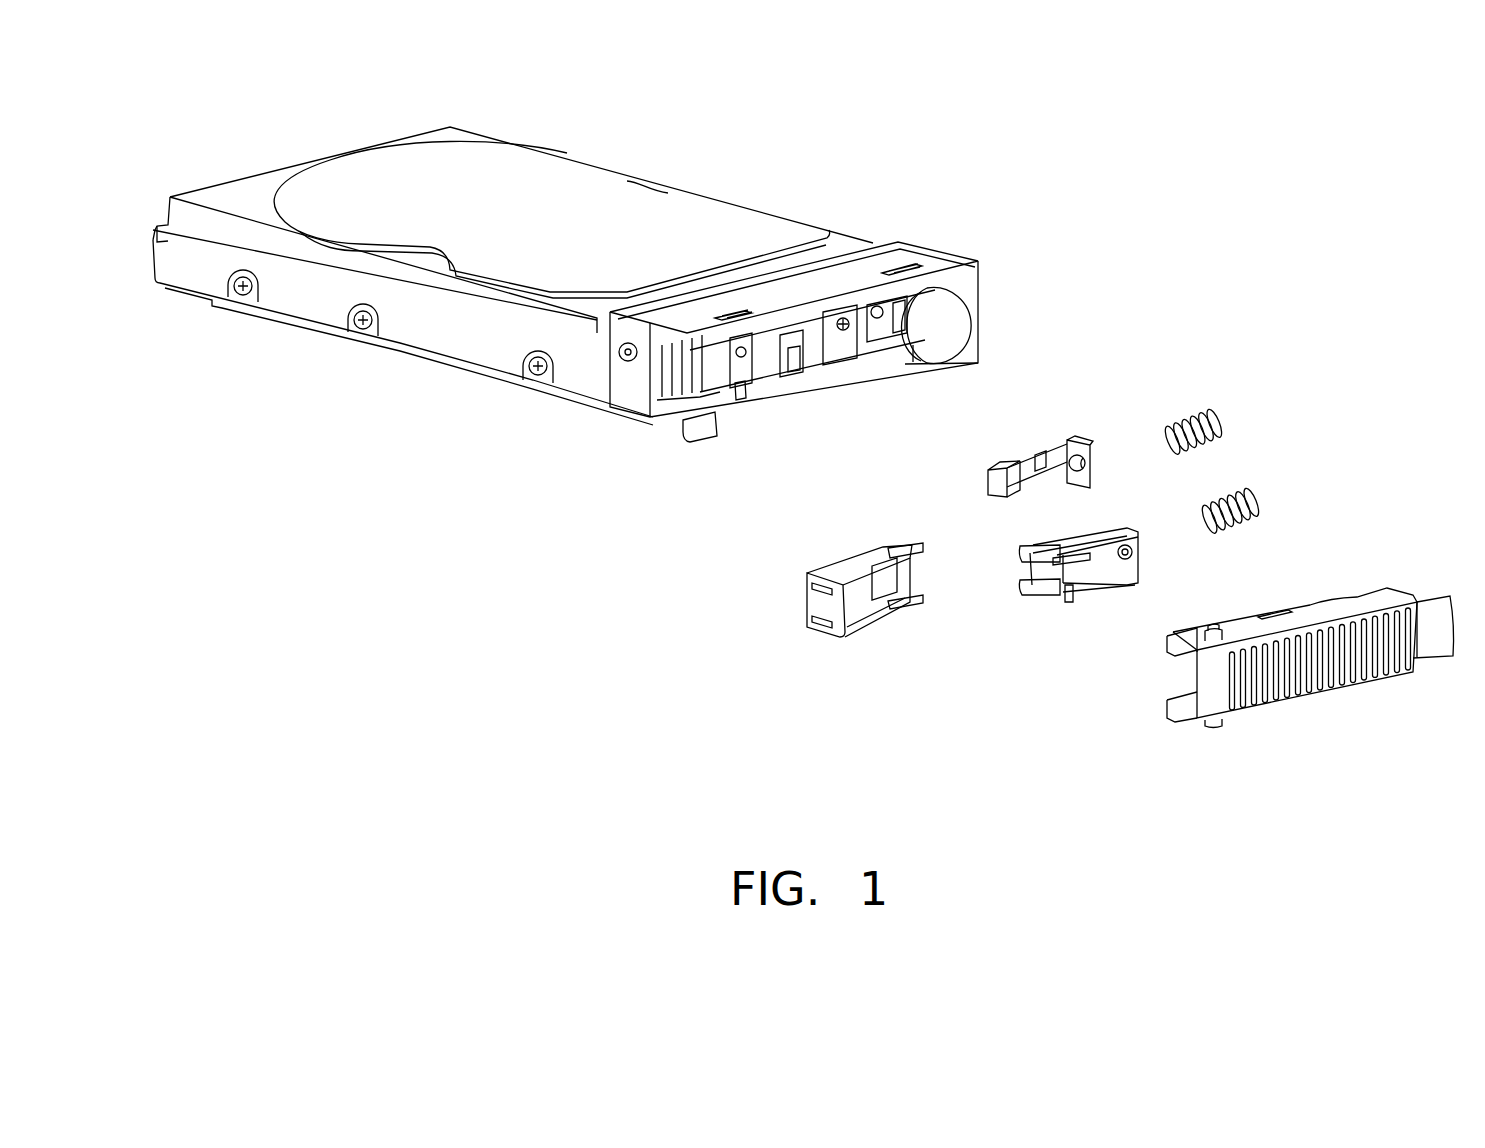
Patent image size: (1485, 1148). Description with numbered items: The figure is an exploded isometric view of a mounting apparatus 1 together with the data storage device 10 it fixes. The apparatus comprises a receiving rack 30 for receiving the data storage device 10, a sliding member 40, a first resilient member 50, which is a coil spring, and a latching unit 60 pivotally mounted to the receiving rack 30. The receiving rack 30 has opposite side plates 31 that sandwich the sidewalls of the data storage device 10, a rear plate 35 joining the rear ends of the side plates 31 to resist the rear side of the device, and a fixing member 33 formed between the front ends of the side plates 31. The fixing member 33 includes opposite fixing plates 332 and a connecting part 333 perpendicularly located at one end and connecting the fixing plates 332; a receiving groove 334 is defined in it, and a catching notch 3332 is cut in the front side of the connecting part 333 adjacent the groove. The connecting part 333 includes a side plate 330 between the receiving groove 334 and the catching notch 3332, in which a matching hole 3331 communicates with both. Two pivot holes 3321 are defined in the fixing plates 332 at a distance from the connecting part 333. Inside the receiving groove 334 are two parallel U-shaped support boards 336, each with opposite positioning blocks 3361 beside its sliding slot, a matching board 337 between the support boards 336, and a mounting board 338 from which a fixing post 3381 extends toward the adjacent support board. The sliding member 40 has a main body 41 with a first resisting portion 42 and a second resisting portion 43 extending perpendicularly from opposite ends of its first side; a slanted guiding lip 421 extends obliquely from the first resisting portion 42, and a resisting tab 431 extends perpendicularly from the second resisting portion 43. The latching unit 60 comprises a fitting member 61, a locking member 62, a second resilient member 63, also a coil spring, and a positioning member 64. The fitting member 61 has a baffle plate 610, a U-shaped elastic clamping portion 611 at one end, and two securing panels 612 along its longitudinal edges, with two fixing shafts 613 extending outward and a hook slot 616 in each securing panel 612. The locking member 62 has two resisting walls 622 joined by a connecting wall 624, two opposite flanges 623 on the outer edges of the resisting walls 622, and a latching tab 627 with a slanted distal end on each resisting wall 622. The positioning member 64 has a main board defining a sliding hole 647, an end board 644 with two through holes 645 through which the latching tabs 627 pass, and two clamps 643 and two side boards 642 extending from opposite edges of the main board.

The mounting apparatus 1 is at (1200, 150).
The data storage device 10 is at (558, 190).
The receiving rack 30 is at (333, 350).
The side plates 31 is at (428, 331).
The fixing member 33 is at (809, 337).
The rear plate 35 is at (165, 230).
The side plate 330 is at (922, 383).
The fixing plates 332 is at (855, 272).
The pivot holes 3321 is at (717, 412).
The connecting part 333 is at (972, 287).
The matching hole 3331 is at (887, 320).
The catching notch 3332 is at (948, 328).
The receiving groove 334 is at (713, 392).
The support boards 336 is at (727, 380).
The positioning blocks 3361 is at (747, 382).
The matching board 337 is at (767, 363).
The mounting board 338 is at (847, 347).
The fixing post 3381 is at (843, 320).
The sliding member 40 is at (1038, 432).
The main body 41 is at (1015, 465).
The first resisting portion 42 is at (1000, 486).
The slanted guiding lip 421 is at (1013, 497).
The second resisting portion 43 is at (1070, 447).
The resisting tab 431 is at (1086, 462).
The first resilient member 50 is at (1195, 418).
The latching unit 60 is at (1047, 700).
The fitting member 61 is at (1332, 708).
The baffle plate 610 is at (1275, 690).
The elastic clamping portion 611 is at (1423, 608).
The securing panels 612 is at (1345, 610).
The fixing shafts 613 is at (1213, 625).
The hook slot 616 is at (1272, 610).
The locking member 62 is at (1132, 515).
The resisting walls 622 is at (1065, 583).
The flanges 623 is at (1105, 585).
The connecting wall 624 is at (1135, 556).
The latching tab 627 is at (1022, 597).
The second resilient member 63 is at (1243, 505).
The positioning member 64 is at (815, 550).
The side boards 642 is at (862, 612).
The clamps 643 is at (912, 607).
The end board 644 is at (828, 607).
The through holes 645 is at (818, 625).
The sliding hole 647 is at (883, 582).